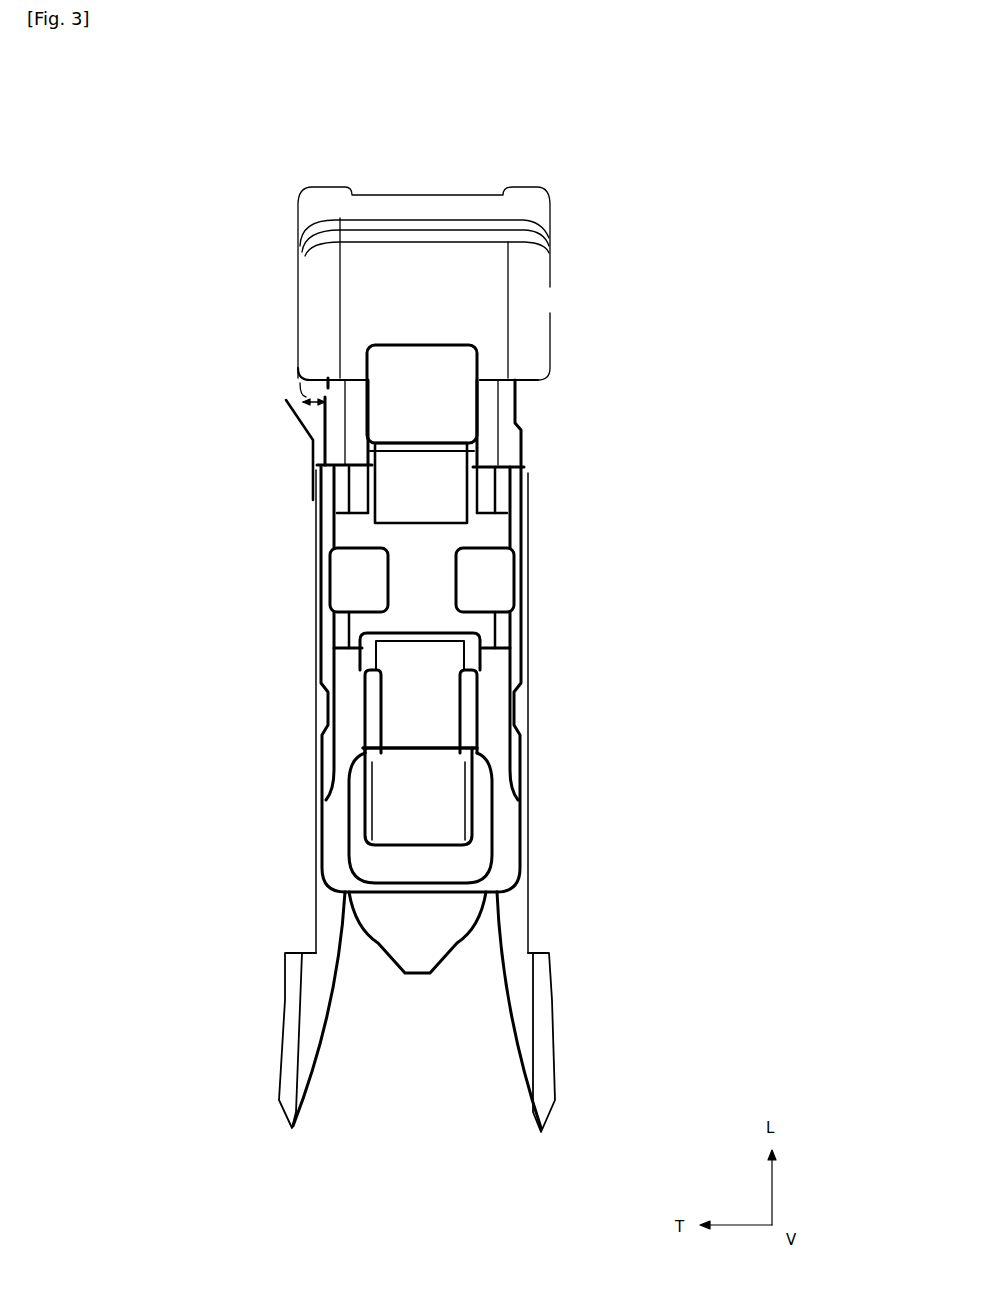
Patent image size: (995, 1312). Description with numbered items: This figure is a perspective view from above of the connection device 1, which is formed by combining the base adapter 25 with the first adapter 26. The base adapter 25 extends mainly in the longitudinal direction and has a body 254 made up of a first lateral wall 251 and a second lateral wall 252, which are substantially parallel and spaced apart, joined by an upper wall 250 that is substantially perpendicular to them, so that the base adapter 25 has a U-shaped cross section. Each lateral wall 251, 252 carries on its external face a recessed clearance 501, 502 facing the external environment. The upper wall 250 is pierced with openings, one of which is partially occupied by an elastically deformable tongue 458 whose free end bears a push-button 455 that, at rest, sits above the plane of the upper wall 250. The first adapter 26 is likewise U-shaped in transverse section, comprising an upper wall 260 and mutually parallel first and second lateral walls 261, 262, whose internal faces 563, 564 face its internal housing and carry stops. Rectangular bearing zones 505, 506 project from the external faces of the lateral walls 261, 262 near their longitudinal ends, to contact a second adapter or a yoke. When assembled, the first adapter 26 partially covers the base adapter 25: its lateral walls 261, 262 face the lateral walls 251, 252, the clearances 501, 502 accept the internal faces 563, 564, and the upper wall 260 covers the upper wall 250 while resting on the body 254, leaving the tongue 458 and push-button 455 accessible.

The connection device 1 is at (112, 199).
The base adapter 25 is at (587, 367).
The first adapter 26 is at (301, 691).
The upper wall 250 is at (495, 678).
The first lateral wall 251 is at (527, 452).
The second lateral wall 252 is at (320, 710).
The body 254 is at (507, 805).
The upper wall 260 is at (427, 547).
The first lateral wall 261 is at (528, 508).
The second lateral wall 262 is at (328, 578).
The push-button 455 is at (400, 813).
The tongue 458 is at (423, 710).
The clearance 501 is at (533, 577).
The clearance 502 is at (317, 625).
The bearing zone 505 is at (528, 537).
The bearing zone 506 is at (528, 622).
The internal face 563 is at (530, 653).
The internal face 564 is at (330, 547).